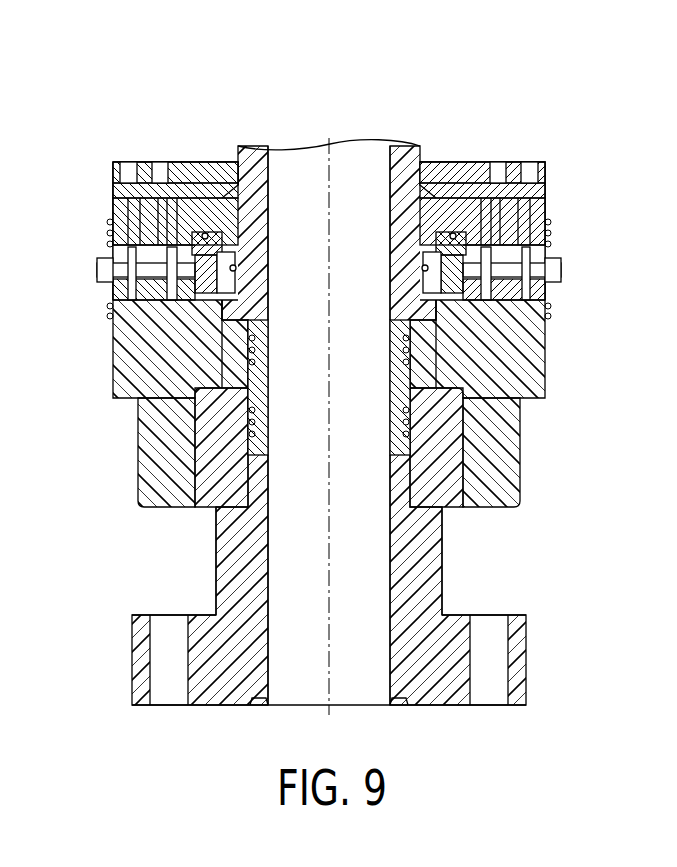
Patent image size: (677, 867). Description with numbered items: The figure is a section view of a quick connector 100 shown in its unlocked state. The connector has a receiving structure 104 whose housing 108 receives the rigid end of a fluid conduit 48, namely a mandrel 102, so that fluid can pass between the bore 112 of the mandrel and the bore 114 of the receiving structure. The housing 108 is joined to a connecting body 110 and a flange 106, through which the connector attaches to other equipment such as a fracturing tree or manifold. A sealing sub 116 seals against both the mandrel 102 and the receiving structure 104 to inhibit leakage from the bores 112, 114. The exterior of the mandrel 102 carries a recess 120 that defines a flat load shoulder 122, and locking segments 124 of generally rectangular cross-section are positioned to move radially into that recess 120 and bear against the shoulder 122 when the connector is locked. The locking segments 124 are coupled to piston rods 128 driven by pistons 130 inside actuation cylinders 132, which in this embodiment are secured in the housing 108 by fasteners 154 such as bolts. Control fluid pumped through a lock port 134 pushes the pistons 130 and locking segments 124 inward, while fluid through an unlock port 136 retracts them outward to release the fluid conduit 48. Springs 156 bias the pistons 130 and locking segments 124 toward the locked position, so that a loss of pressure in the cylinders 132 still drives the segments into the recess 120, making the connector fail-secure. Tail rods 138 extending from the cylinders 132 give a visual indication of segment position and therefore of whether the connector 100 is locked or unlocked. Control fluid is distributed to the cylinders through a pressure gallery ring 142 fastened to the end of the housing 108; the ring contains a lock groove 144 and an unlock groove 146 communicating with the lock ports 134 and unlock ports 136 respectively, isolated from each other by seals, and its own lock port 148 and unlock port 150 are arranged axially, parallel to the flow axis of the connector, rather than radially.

The fluid conduit 48 is at (379, 110).
The quick connector 100 is at (172, 515).
The mandrel 102 is at (430, 158).
The receiving structure 104 is at (462, 515).
The flange 106 is at (518, 660).
The housing 108 is at (505, 478).
The connecting body 110 is at (437, 573).
The bore 112 is at (268, 220).
The bore 114 is at (268, 580).
The sealing sub 116 is at (263, 415).
The recess 120 is at (230, 262).
The shoulder 122 is at (237, 287).
The locking segments 124 is at (256, 326).
The piston rods 128 is at (160, 320).
The pistons 130 is at (128, 270).
The actuation cylinders 132 is at (252, 162).
The lock port 134 is at (218, 162).
The unlock port 136 is at (128, 250).
The tail rods 138 is at (97, 267).
The pressure gallery ring 142 is at (113, 198).
The lock groove 144 is at (113, 172).
The unlock groove 146 is at (193, 162).
The lock port 148 is at (126, 162).
The unlock port 150 is at (160, 162).
The fasteners 154 is at (110, 228).
The springs 156 is at (135, 305).